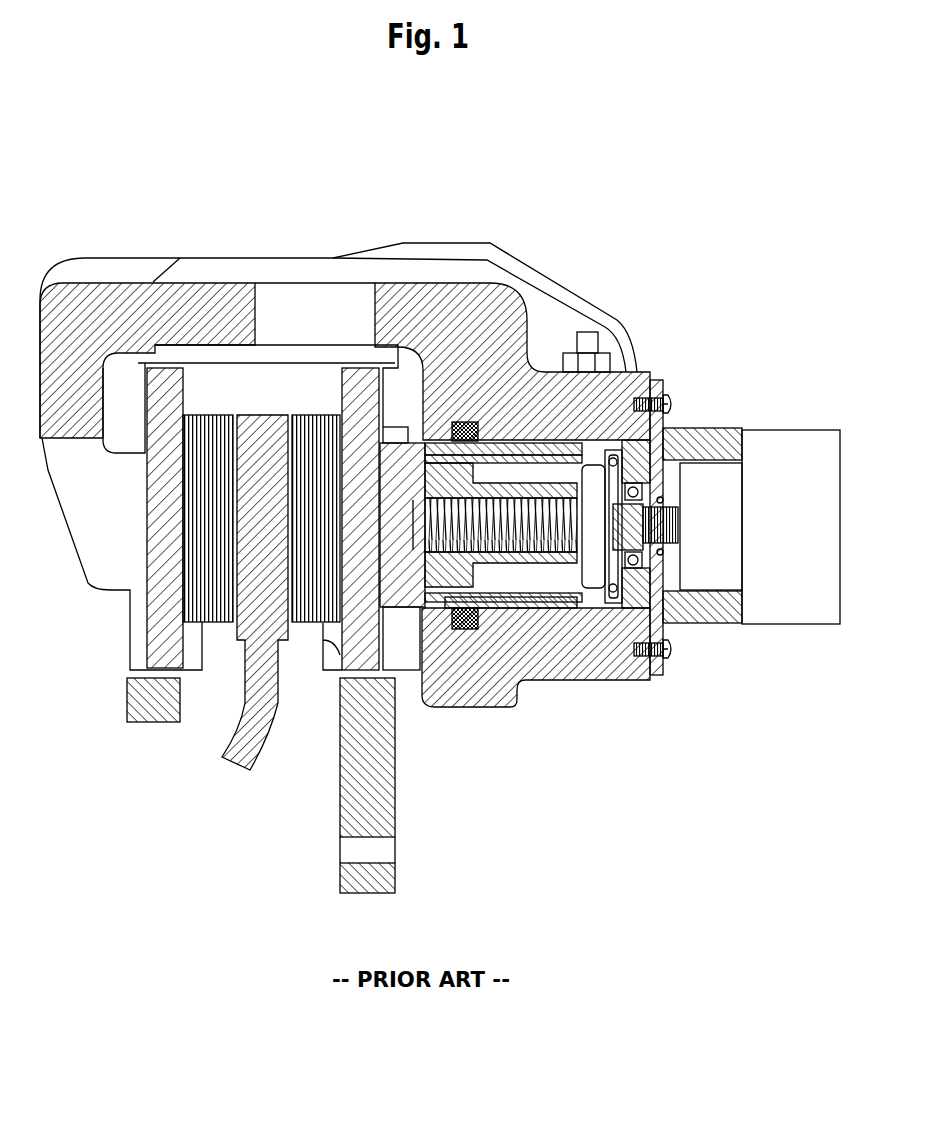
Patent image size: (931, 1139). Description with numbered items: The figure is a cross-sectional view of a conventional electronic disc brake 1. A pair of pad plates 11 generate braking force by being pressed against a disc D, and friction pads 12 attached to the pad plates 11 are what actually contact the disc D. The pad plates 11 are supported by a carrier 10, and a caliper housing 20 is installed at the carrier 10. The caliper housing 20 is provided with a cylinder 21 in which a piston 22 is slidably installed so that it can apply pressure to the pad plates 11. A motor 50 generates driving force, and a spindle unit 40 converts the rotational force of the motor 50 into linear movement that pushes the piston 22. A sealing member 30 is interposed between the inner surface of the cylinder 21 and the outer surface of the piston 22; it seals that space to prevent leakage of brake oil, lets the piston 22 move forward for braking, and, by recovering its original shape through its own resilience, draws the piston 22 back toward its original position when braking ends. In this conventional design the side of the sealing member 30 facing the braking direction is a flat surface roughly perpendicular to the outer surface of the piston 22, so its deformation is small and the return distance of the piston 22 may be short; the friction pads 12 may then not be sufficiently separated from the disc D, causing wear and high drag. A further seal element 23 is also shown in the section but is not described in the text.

The electronic disc brake 1 is at (716, 212).
The carrier 10 is at (340, 806).
The pad plates 11 is at (158, 637).
The friction pads 12 is at (212, 622).
The disc D is at (232, 738).
The caliper housing 20 is at (572, 275).
The cylinder 21 is at (598, 378).
The piston 22 is at (548, 610).
The seal 23 is at (470, 630).
The sealing member 30 is at (461, 422).
The spindle unit 40 is at (566, 576).
The motor 50 is at (780, 610).